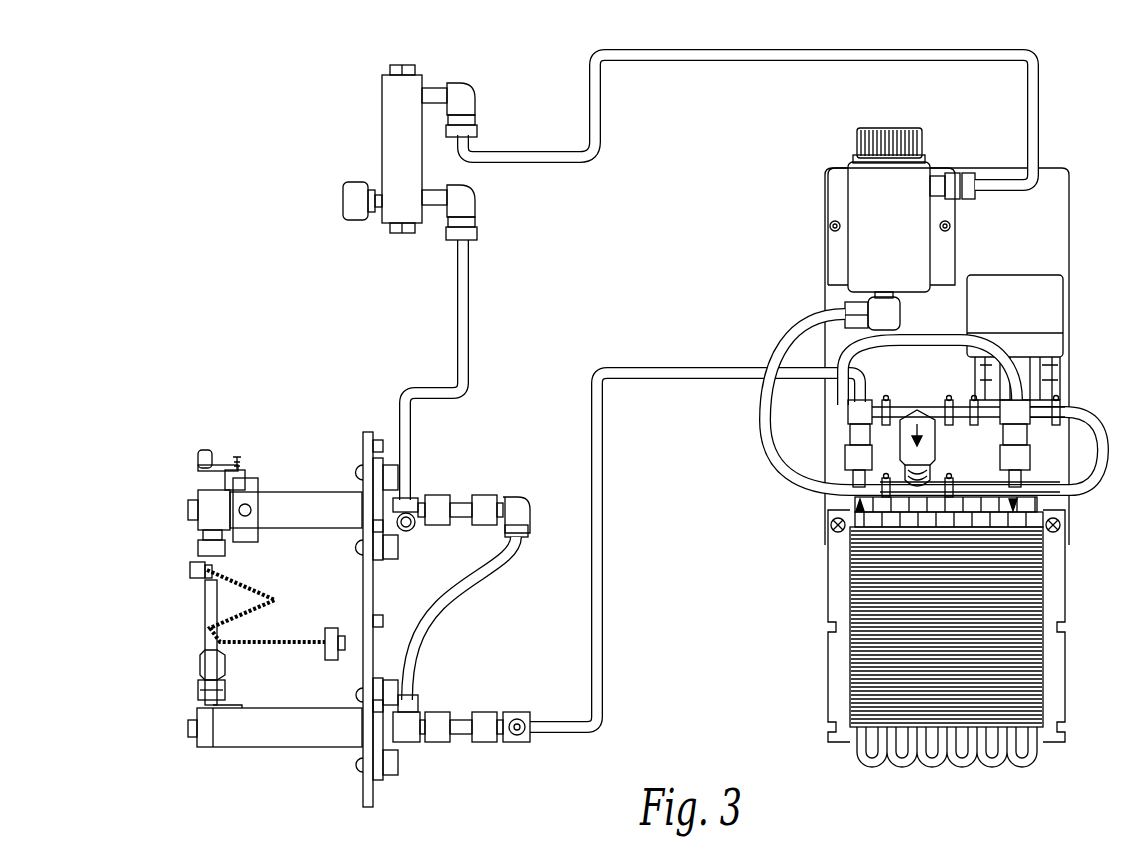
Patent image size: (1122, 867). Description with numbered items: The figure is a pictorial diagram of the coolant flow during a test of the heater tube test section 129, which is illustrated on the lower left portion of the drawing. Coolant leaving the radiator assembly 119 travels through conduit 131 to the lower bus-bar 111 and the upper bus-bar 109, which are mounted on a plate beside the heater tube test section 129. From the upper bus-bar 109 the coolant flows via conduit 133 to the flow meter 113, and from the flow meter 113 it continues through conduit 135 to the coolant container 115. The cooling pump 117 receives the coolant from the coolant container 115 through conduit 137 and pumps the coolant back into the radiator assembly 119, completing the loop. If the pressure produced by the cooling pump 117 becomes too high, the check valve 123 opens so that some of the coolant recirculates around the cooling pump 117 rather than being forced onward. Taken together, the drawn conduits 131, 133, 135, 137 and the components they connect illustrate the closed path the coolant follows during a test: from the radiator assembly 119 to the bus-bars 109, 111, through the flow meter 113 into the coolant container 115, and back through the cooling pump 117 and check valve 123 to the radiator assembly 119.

The upper bus-bar 109 is at (323, 518).
The lower bus-bar 111 is at (308, 736).
The flow meter 113 is at (421, 151).
The coolant container 115 is at (910, 232).
The cooling pump 117 is at (1035, 317).
The radiator assembly 119 is at (1048, 602).
The check valve 123 is at (936, 442).
The heater tube test section 129 is at (188, 640).
The conduit 131 is at (604, 545).
The conduit 133 is at (467, 323).
The conduit 135 is at (778, 50).
The conduit 137 is at (762, 432).